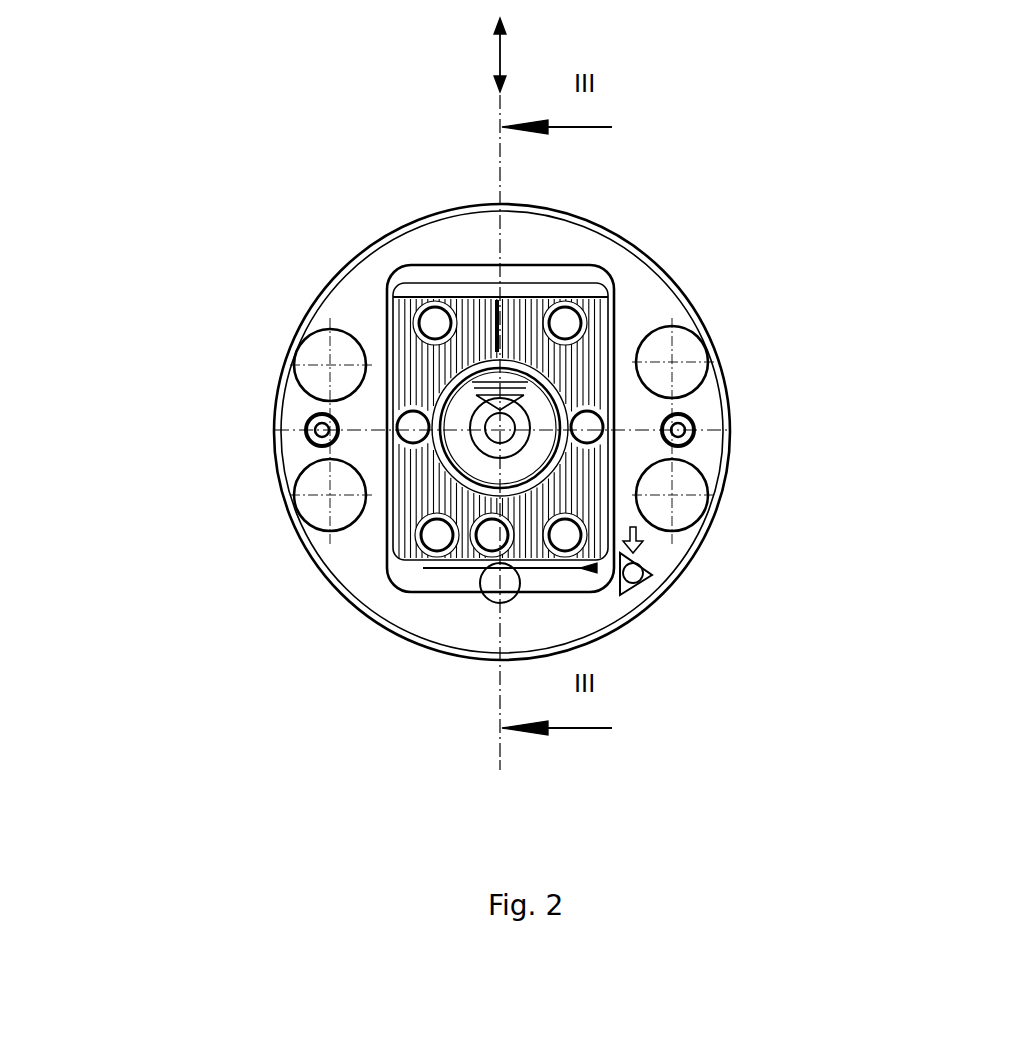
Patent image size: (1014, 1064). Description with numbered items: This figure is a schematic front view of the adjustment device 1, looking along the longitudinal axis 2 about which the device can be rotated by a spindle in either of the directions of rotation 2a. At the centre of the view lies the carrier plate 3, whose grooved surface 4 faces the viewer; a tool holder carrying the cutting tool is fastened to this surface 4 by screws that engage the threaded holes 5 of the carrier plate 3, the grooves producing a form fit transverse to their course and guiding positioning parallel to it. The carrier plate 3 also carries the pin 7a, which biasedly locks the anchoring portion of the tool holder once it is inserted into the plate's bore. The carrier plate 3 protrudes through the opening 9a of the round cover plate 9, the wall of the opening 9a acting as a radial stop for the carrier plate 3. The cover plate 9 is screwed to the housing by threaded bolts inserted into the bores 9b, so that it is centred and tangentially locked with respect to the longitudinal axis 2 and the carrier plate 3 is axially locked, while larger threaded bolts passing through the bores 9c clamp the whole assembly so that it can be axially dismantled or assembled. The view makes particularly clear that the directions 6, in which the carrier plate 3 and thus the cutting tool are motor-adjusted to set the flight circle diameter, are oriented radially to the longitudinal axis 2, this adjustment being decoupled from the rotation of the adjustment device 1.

The adjustment device 1 is at (847, 578).
The longitudinal axis 2 is at (550, 418).
The directions of rotation 2a is at (470, 778).
The carrier plate 3 is at (606, 338).
The surface 4 is at (480, 300).
The threaded holes 5 is at (419, 323).
The directions 6 is at (497, 48).
The pin 7a is at (485, 398).
The cover plate 9 is at (590, 612).
The opening 9a is at (600, 570).
The bores 9b is at (316, 430).
The bores 9c is at (315, 508).